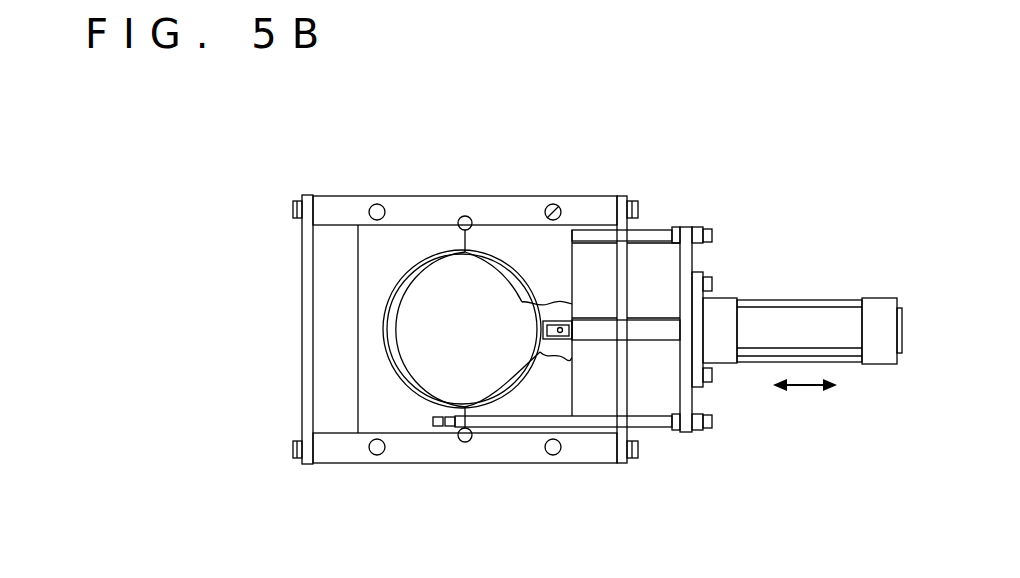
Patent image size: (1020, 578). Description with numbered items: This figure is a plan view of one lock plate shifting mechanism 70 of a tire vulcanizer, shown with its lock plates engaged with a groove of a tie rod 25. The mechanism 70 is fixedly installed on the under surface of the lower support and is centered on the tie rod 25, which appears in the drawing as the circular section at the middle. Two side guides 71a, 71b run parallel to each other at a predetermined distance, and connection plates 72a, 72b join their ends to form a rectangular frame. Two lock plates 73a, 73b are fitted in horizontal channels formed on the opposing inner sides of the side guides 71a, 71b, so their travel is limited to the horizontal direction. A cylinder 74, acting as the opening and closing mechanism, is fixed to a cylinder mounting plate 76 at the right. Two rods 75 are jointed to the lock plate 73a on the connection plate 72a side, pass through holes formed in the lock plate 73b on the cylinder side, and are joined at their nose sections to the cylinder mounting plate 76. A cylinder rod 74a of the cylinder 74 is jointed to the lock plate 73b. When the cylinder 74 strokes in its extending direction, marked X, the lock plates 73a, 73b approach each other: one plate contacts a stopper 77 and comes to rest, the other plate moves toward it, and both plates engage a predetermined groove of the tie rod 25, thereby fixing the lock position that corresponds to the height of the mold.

The lock plate shifting mechanism 70 is at (370, 168).
The connection plate 72a is at (307, 274).
The connection plate 72b is at (622, 204).
The side guide 71a is at (495, 210).
The side guide 71b is at (508, 450).
The lock plate 73a is at (388, 250).
The lock plate 73b is at (538, 250).
The stopper 77 is at (465, 216).
The tie rod 25 is at (461, 370).
The rod 75 is at (648, 237).
The cylinder 74 is at (792, 300).
The cylinder rod 74a is at (650, 330).
The cylinder mounting plate 76 is at (687, 262).